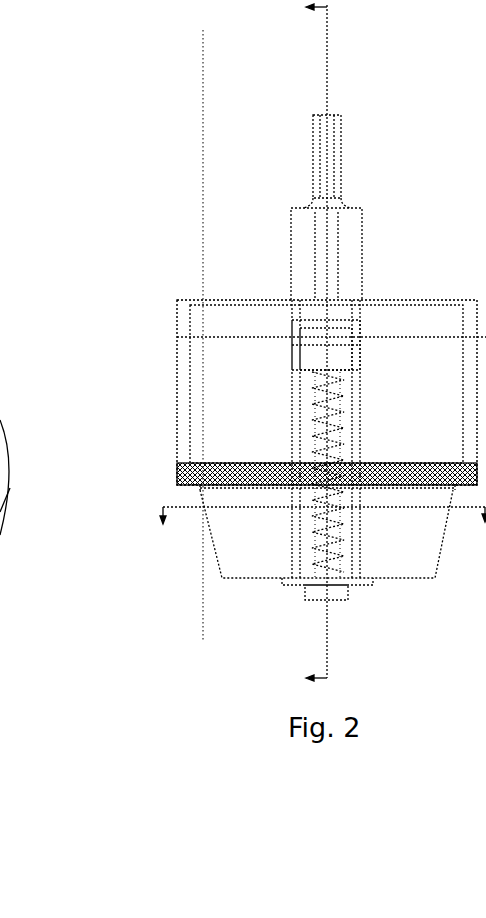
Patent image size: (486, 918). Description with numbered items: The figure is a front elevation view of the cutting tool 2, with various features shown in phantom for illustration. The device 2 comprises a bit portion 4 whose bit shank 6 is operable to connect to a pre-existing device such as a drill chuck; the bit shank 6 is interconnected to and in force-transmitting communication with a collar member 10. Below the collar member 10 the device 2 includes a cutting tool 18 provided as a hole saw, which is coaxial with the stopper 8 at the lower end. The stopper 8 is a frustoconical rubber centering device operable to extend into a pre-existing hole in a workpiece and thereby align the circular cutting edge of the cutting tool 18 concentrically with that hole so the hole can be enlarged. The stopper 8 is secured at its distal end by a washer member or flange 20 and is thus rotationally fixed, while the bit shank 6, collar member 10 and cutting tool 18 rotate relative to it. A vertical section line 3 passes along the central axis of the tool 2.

The cutting tool 2 is at (151, 425).
The section line / axis 3 is at (331, 344).
The bit portion 4 is at (277, 246).
The bit shank 6 is at (326, 113).
The stopper 8 is at (269, 540).
The collar member 10 is at (299, 225).
The cutting tool 18 is at (199, 367).
The washer member or flange 20 is at (376, 560).